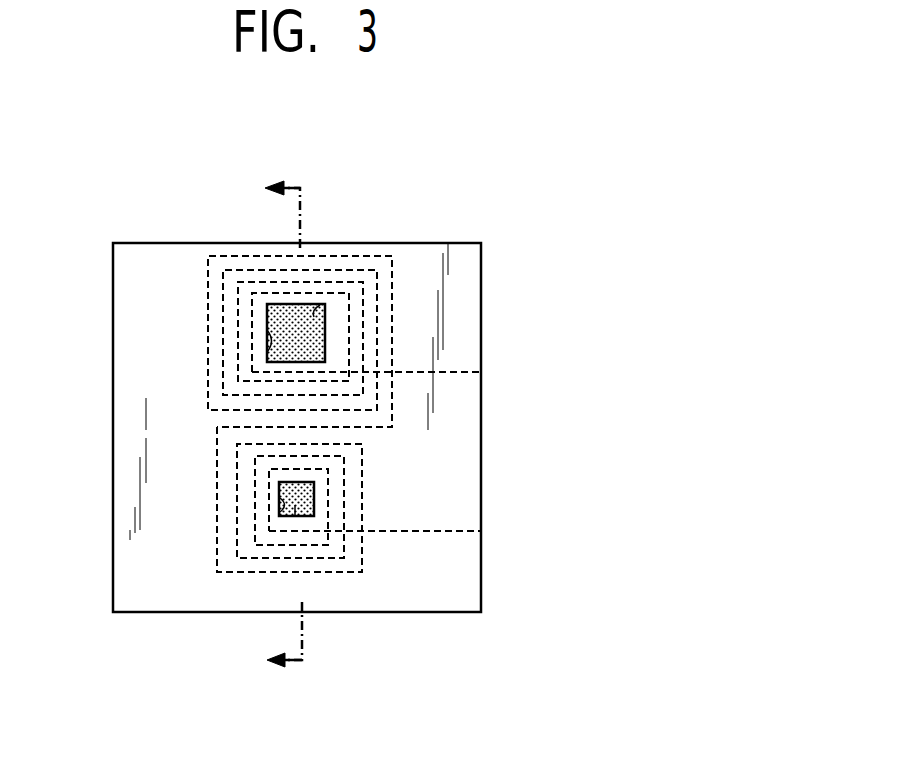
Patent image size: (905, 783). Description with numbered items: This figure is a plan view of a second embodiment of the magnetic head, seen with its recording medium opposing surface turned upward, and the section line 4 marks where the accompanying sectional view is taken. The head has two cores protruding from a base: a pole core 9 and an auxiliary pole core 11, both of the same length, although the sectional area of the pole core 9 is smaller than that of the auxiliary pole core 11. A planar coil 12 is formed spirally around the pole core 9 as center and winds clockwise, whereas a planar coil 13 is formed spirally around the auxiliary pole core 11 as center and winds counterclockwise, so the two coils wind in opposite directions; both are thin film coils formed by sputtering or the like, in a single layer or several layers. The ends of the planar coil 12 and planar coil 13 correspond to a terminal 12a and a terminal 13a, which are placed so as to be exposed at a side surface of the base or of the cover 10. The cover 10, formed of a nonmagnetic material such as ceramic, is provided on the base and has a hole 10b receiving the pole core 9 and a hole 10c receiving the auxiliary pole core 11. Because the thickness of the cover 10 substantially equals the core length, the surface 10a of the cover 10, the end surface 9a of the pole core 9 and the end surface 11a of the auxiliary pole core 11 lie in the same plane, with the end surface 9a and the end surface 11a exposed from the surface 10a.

The section line 4 is at (283, 427).
The pole core 9 is at (315, 508).
The end surface of the pole core 9a is at (295, 516).
The cover 10 is at (481, 577).
The surface of the cover 10a is at (132, 407).
The hole 10b is at (280, 513).
The hole 10c is at (267, 350).
The auxiliary pole core 11 is at (277, 303).
The end surface of the auxiliary pole core 11a is at (320, 305).
The planar coil 12 is at (363, 462).
The terminal 12a is at (440, 532).
The planar coil 13 is at (392, 308).
The terminal 13a is at (443, 371).